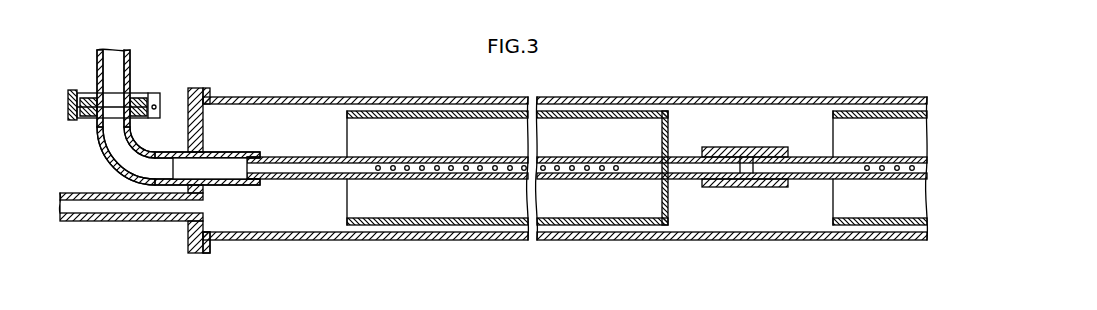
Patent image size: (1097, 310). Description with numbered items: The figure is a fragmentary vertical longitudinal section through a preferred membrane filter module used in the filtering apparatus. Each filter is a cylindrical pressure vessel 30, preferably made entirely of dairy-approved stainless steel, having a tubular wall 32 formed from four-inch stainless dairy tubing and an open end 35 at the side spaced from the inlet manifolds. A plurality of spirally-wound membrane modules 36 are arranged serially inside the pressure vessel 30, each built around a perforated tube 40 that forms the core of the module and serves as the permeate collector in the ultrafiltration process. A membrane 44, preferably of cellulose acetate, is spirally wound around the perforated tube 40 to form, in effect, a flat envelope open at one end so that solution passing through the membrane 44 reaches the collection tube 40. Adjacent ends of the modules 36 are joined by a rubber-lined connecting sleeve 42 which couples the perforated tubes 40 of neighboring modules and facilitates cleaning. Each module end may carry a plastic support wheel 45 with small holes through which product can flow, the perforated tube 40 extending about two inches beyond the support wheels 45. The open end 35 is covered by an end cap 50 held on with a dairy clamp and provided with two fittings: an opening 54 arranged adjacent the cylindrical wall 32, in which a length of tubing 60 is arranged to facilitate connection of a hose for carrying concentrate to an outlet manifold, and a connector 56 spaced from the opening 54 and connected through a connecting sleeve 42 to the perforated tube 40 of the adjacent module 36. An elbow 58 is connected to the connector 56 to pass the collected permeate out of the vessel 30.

The cylindrical pressure vessel 30 is at (653, 93).
The tubular wall 32 is at (301, 100).
The open end 35 is at (206, 238).
The spirally-wound membrane module 36 is at (437, 226).
The perforated tube 40 is at (688, 180).
The connecting sleeve 42 is at (758, 147).
The membrane 44 is at (348, 204).
The plastic support wheel 45 is at (669, 130).
The end cap 50 is at (194, 128).
The opening 54 is at (205, 188).
The connector 56 is at (235, 152).
The elbow 58 is at (96, 154).
The length of tubing 60 is at (115, 223).